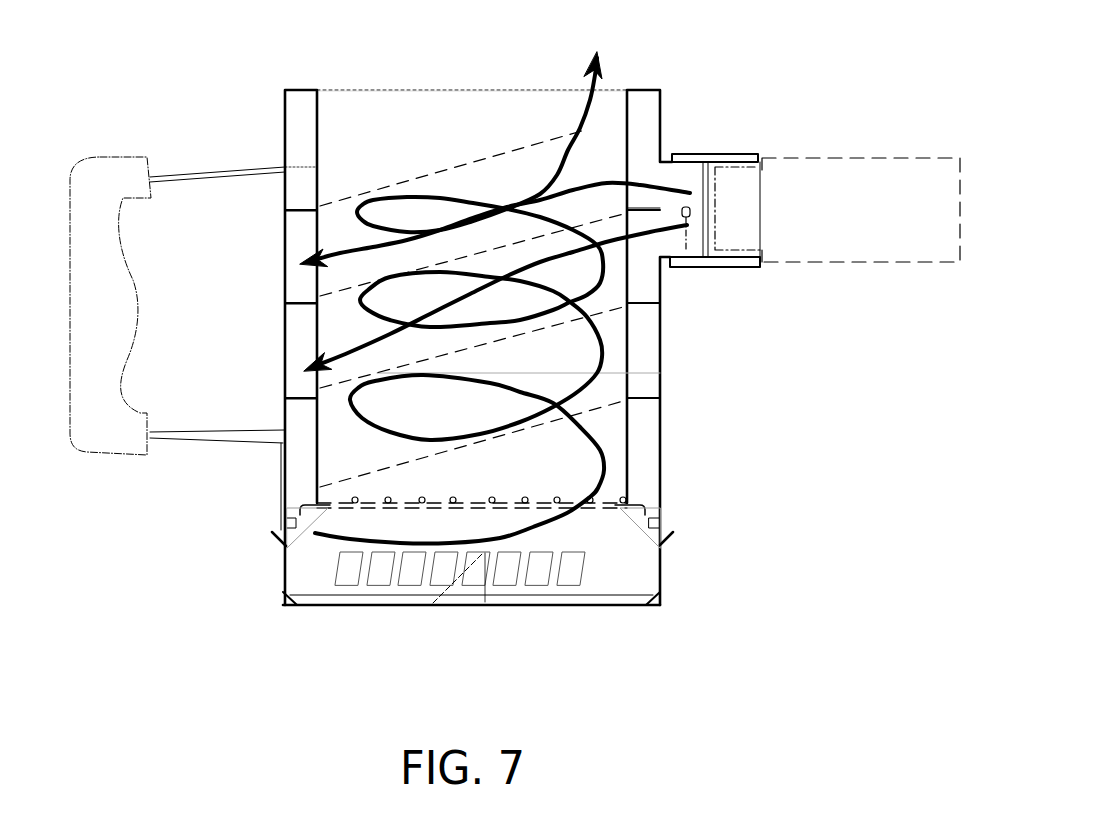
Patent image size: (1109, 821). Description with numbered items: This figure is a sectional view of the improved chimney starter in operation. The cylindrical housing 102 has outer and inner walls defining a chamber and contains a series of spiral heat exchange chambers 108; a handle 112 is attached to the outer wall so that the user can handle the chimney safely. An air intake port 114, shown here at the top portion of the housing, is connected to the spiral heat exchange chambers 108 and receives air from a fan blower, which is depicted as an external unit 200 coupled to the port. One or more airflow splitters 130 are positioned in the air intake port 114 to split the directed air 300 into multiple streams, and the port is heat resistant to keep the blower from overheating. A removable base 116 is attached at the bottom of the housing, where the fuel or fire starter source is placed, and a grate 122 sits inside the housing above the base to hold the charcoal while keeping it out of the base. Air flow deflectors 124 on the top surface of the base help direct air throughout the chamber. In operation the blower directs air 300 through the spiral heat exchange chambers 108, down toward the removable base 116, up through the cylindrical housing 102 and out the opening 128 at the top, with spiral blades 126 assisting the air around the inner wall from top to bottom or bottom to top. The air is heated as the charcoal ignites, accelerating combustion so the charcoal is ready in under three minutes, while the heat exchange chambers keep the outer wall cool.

The cylindrical housing 102 is at (283, 115).
The spiral heat exchange chambers 108 is at (292, 430).
The handle 112 is at (100, 158).
The air intake port 114 is at (747, 152).
The removable base 116 is at (650, 570).
The grate 122 is at (343, 504).
The air flow deflectors 124 is at (485, 598).
The spiral blades 126 is at (537, 143).
The opening 128 is at (365, 98).
The airflow splitters 130 is at (643, 210).
The external supply unit 200 is at (893, 220).
The air 300 is at (675, 195).